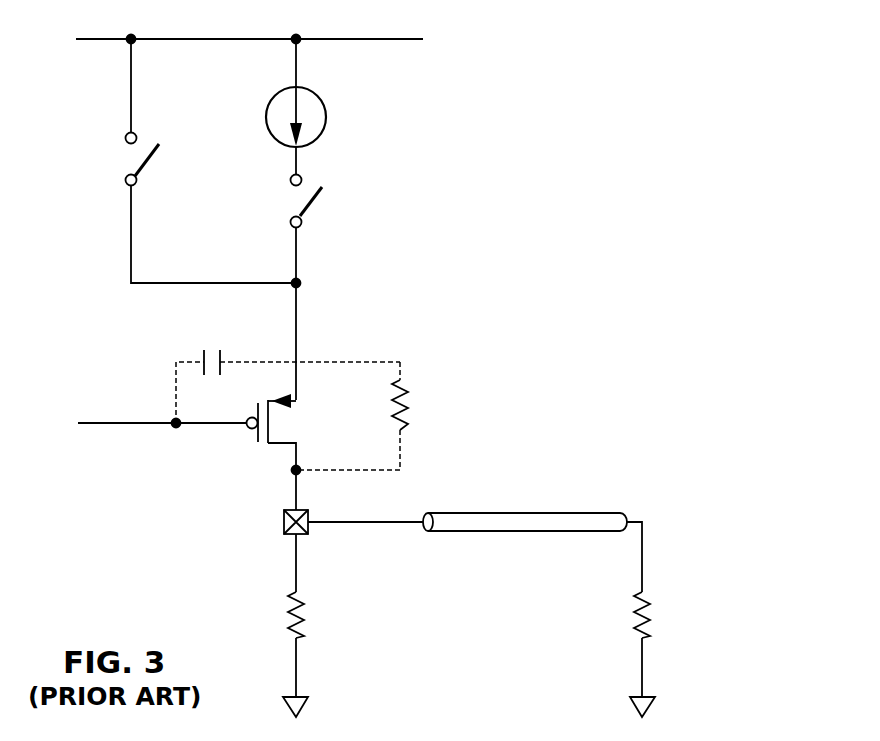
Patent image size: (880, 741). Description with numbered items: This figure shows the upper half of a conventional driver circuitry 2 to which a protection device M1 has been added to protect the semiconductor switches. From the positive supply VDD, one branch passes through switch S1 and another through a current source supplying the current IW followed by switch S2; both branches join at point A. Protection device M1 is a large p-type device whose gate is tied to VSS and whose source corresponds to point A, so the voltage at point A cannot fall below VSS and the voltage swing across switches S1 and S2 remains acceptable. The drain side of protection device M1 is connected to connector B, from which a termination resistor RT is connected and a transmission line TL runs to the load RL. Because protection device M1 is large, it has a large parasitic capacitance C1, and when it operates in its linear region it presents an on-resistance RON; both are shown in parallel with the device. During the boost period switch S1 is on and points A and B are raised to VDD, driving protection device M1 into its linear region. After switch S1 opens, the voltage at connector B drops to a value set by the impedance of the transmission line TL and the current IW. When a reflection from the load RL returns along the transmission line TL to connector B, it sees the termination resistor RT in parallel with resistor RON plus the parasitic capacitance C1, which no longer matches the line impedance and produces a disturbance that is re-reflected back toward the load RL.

The driver circuitry 2 is at (524, 103).
The positive supply voltage VDD is at (249, 25).
The switch S1 is at (191, 161).
The current source current IW is at (318, 107).
The switch S2 is at (327, 288).
The point A is at (310, 279).
The protection device M1 is at (297, 434).
The supply voltage VSS is at (133, 418).
The parasitic capacitance C1 is at (288, 366).
The on-resistance RON is at (386, 416).
The connector B is at (310, 502).
The termination resistor RT is at (317, 625).
The transmission line TL is at (475, 533).
The load RL is at (662, 654).